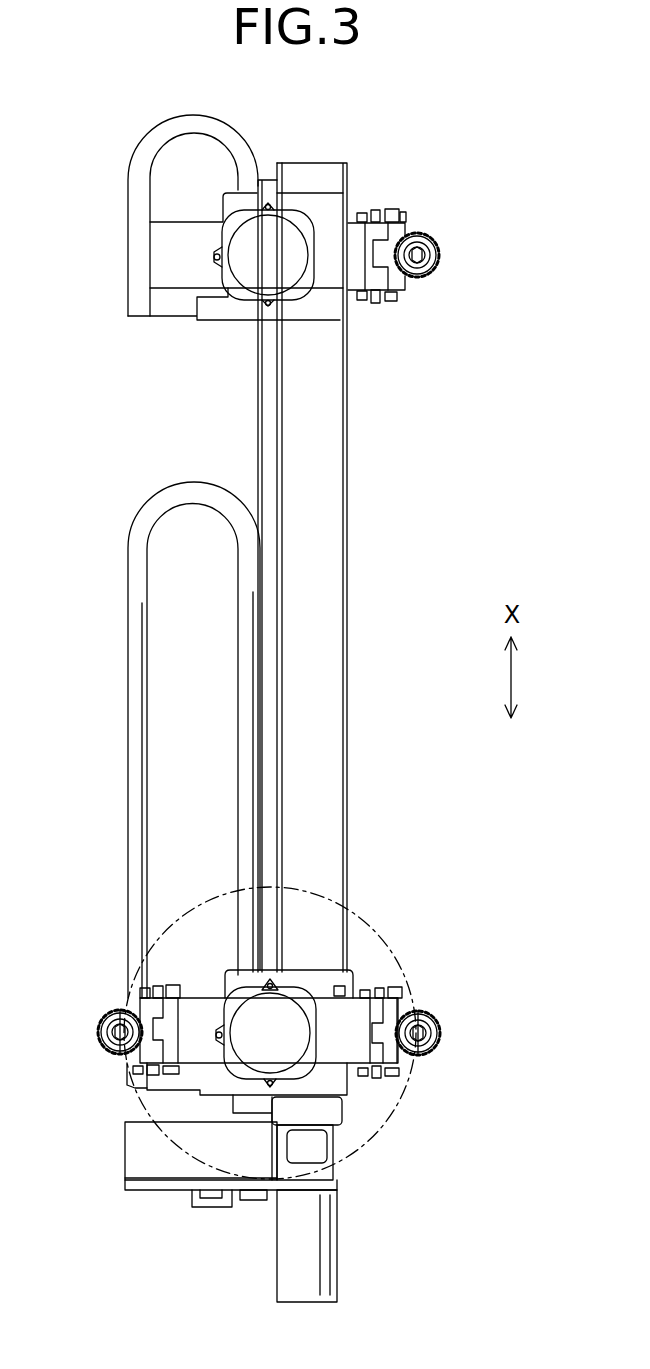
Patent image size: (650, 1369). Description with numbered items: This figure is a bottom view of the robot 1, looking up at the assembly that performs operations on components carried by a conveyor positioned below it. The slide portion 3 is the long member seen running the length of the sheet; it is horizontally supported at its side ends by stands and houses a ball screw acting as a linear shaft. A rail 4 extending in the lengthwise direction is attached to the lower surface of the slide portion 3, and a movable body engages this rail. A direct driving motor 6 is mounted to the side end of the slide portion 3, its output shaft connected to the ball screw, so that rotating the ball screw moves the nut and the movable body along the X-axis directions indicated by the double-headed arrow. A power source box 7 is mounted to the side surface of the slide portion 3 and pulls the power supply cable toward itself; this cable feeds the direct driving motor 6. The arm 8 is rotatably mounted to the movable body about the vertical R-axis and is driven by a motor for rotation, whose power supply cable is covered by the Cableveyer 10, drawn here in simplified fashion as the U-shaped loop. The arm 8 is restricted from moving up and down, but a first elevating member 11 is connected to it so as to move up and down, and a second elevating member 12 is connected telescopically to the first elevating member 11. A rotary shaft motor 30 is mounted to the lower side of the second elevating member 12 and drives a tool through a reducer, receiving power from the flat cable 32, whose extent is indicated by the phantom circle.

The robot 1 is at (458, 162).
The slide portion 3 is at (347, 410).
The rail 4 is at (333, 645).
The direct driving motor 6 is at (328, 980).
The power source box 7 is at (133, 1153).
The arm 8 is at (338, 1055).
The Cableveyer 10 is at (138, 640).
The first elevating member 11 is at (378, 1066).
The second elevating member 12 is at (414, 1058).
The rotary shaft motor 30 is at (440, 1032).
The flat cable 32 is at (390, 981).